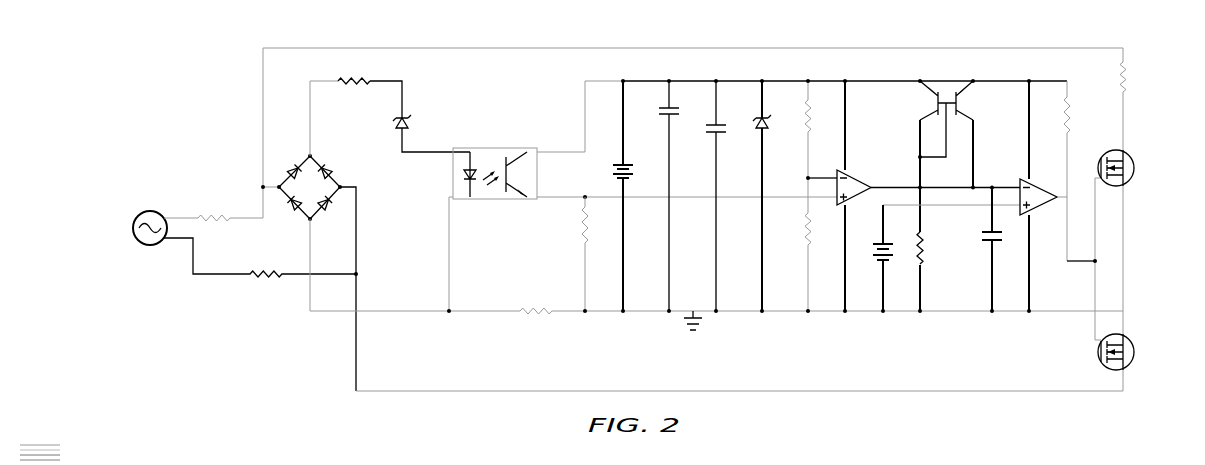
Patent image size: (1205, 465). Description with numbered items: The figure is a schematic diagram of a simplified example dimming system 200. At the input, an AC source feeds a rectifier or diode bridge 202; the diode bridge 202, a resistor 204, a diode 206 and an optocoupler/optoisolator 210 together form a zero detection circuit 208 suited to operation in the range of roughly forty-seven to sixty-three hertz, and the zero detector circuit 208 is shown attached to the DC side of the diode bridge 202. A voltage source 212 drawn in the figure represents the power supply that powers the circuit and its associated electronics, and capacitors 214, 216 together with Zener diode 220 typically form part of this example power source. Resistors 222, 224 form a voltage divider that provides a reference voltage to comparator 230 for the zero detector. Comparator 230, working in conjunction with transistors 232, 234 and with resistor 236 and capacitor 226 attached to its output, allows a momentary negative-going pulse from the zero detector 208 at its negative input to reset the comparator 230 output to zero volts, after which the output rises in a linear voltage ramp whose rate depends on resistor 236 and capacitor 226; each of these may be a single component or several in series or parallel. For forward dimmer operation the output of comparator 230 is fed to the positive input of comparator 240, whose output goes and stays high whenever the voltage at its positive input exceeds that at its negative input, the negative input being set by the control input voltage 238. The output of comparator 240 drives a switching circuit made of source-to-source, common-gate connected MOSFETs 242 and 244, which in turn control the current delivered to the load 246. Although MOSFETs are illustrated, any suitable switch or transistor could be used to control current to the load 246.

The dimming system 200 is at (181, 57).
The diode bridge 202 is at (302, 165).
The resistor 204 is at (338, 81).
The diode 206 is at (398, 127).
The zero detection circuit 208 is at (433, 77).
The optocoupler 210 is at (481, 148).
The battery 212 is at (619, 163).
The capacitor 214 is at (663, 116).
The capacitor 216 is at (710, 134).
The Zener diode 220 is at (756, 129).
The resistor 222 is at (806, 248).
The resistor 224 is at (806, 135).
The capacitor 226 is at (989, 242).
The comparator 230 is at (854, 170).
The transistor 232 is at (936, 110).
The transistor 234 is at (958, 110).
The resistor 236 is at (916, 266).
The control input voltage 238 is at (878, 243).
The comparator 240 is at (1035, 213).
The MOSFET 242 is at (1128, 366).
The MOSFET 244 is at (1129, 155).
The load 246 is at (1119, 94).